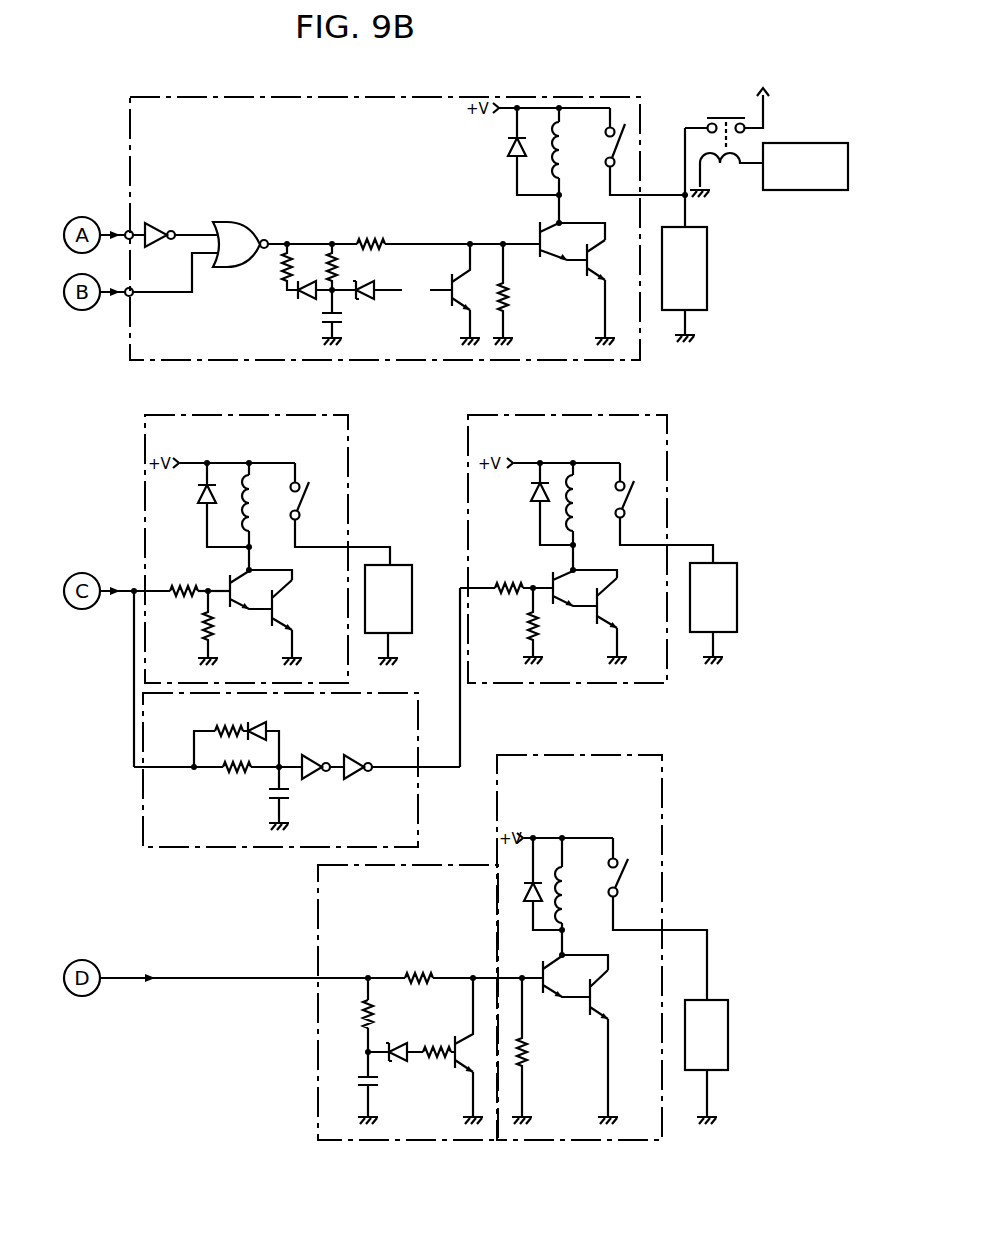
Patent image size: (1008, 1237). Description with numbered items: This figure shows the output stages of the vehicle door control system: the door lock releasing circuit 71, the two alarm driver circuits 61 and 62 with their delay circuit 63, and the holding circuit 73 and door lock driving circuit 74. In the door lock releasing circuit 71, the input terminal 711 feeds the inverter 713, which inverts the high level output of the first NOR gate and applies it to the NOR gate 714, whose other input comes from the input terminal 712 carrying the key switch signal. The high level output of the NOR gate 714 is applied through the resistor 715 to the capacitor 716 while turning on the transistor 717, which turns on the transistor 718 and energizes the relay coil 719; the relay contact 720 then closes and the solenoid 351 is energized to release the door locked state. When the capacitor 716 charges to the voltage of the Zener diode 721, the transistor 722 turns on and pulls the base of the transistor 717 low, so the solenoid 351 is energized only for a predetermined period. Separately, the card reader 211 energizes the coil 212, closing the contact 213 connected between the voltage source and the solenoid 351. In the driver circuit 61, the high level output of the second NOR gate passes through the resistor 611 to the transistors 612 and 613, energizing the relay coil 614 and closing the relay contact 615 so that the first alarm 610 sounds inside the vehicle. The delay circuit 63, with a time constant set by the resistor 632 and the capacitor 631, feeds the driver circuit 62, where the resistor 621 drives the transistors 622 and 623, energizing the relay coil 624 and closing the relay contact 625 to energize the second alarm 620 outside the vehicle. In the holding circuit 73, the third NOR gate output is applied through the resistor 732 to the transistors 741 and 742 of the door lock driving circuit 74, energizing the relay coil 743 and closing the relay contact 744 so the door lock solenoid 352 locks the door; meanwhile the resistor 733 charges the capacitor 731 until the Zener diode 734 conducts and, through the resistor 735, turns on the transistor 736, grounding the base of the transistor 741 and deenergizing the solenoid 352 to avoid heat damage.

The door lock releasing circuit 71 is at (447, 97).
The input terminal 711 is at (131, 240).
The input terminal 712 is at (131, 297).
The inverter 713 is at (158, 223).
The NOR gate 714 is at (228, 222).
The resistor 715 is at (355, 242).
The capacitor 716 is at (322, 318).
The transistor 717 is at (537, 235).
The transistor 718 is at (583, 271).
The relay coil 719 is at (553, 162).
The relay contact 720 is at (614, 153).
The Zener diode 721 is at (362, 298).
The transistor 722 is at (450, 281).
The solenoid 351 is at (708, 268).
The card reader 211 is at (795, 143).
The coil 212 is at (728, 167).
The contact 213 is at (720, 117).
The driver circuit 61 is at (348, 472).
The first alarm 610 is at (405, 565).
The resistor 611 is at (185, 583).
The transistor 612 is at (230, 604).
The transistor 613 is at (287, 595).
The relay coil 614 is at (257, 522).
The relay contact 615 is at (305, 497).
The driver circuit 62 is at (667, 468).
The second alarm 620 is at (722, 565).
The resistor 621 is at (508, 580).
The transistor 622 is at (553, 603).
The transistor 623 is at (610, 597).
The relay coil 624 is at (578, 515).
The relay contact 625 is at (627, 493).
The delay circuit 63 is at (420, 802).
The capacitor 631 is at (289, 793).
The resistor 632 is at (240, 773).
The holding circuit 73 is at (318, 963).
The capacitor 731 is at (378, 1080).
The resistor 732 is at (422, 972).
The resistor 733 is at (372, 1010).
The Zener diode 734 is at (397, 1047).
The resistor 735 is at (438, 1043).
The transistor 736 is at (453, 1065).
The door lock driving circuit 74 is at (663, 860).
The transistor 741 is at (543, 993).
The transistor 742 is at (590, 1007).
The relay coil 743 is at (568, 900).
The relay contact 744 is at (623, 877).
The door lock solenoid 352 is at (718, 1002).